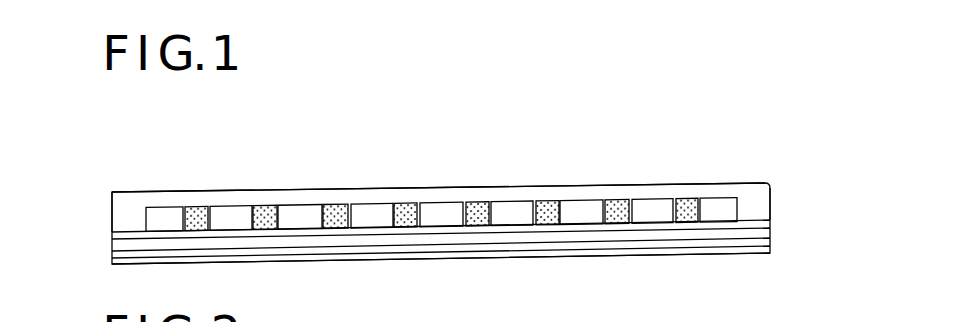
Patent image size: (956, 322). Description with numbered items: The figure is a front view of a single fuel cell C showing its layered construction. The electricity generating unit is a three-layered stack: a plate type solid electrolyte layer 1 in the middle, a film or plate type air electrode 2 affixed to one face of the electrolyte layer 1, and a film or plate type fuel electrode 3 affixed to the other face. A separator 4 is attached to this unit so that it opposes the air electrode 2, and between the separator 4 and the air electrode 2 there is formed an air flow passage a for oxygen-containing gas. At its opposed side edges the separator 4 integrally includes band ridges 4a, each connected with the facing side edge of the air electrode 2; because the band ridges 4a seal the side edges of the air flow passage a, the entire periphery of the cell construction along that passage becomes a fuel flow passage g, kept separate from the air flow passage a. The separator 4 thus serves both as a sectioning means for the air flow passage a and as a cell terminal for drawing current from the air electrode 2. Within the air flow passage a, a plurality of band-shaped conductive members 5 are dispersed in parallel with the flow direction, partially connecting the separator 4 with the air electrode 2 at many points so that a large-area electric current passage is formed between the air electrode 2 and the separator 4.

The solid electrolyte layer 1 is at (771, 236).
The air electrode 2 is at (771, 222).
The fuel electrode 3 is at (764, 254).
The separator 4 is at (514, 188).
The band ridges 4a is at (119, 214).
The band-shaped conductive members 5 is at (196, 206).
The air flow passage a is at (232, 212).
The fuel cell C is at (558, 165).
The fuel flow passage g is at (443, 219).